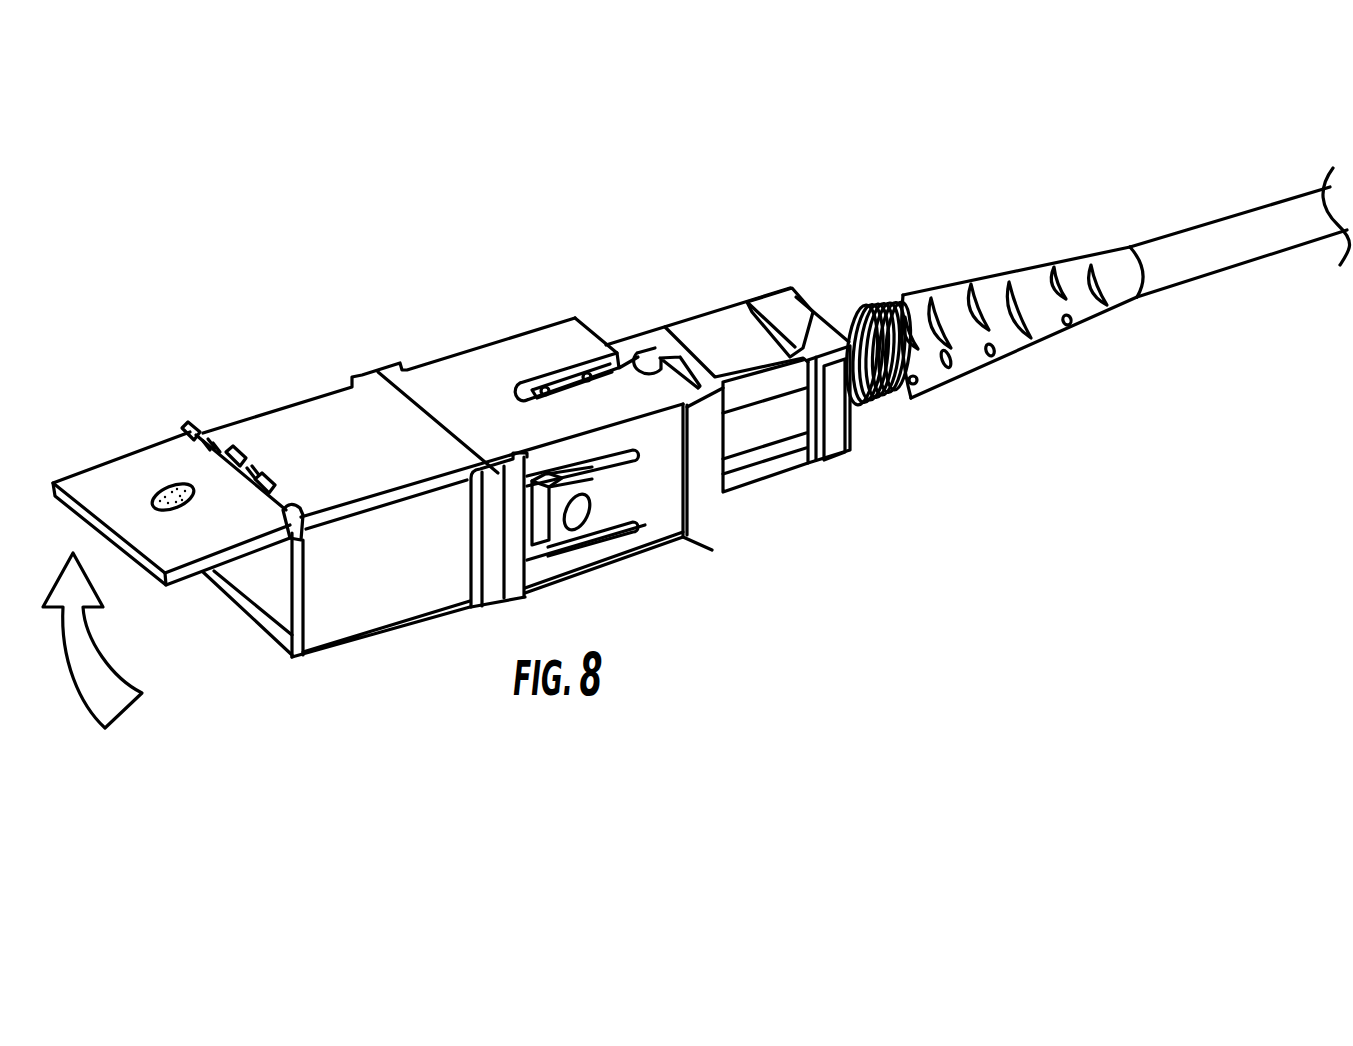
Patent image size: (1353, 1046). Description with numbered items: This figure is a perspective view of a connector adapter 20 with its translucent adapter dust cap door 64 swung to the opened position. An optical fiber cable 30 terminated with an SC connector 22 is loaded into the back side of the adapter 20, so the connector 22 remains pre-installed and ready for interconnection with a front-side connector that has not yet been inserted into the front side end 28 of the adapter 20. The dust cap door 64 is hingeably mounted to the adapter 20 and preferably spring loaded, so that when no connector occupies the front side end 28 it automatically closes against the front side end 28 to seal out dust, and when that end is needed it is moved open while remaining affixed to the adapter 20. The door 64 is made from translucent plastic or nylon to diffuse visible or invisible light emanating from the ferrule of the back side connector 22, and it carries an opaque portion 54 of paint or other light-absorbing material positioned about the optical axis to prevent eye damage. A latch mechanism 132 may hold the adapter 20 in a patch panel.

The connector adapter 20 is at (463, 353).
The connector 22 is at (700, 316).
The front side end 28 is at (193, 411).
The optical fiber cable 30 is at (1207, 222).
The opaque portion 54 is at (168, 493).
The translucent adapter dust cap door 64 is at (97, 483).
The latch mechanism 132 is at (563, 550).